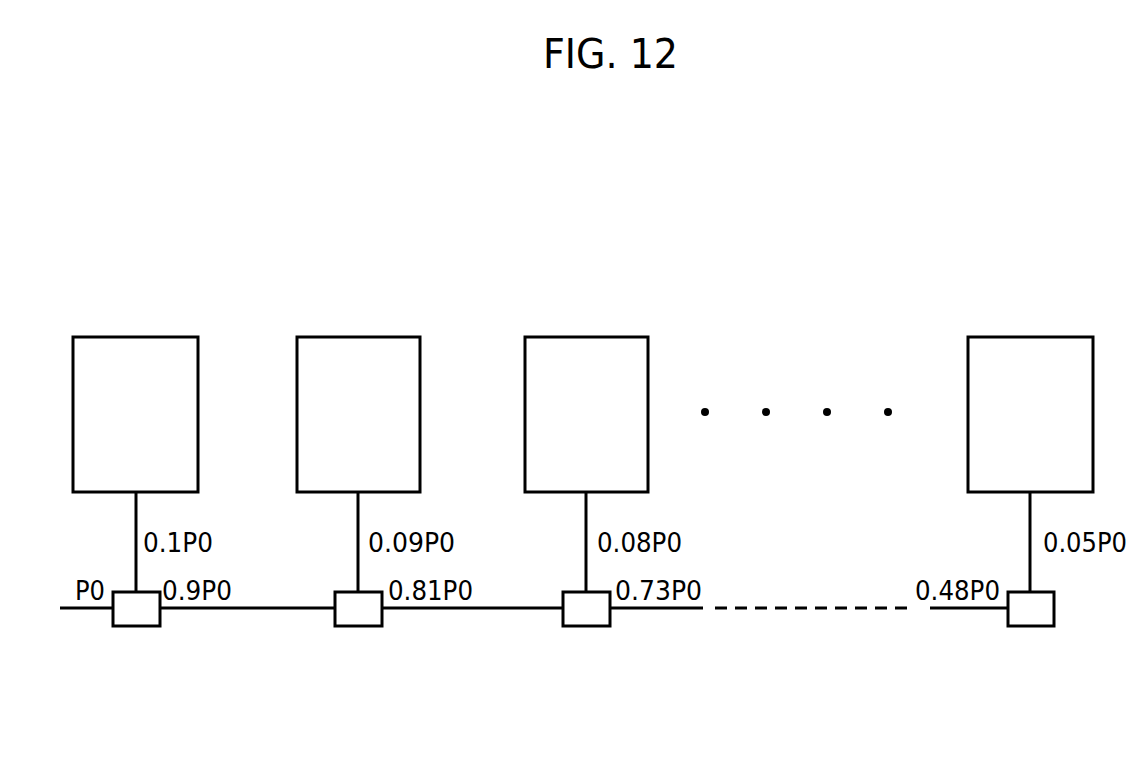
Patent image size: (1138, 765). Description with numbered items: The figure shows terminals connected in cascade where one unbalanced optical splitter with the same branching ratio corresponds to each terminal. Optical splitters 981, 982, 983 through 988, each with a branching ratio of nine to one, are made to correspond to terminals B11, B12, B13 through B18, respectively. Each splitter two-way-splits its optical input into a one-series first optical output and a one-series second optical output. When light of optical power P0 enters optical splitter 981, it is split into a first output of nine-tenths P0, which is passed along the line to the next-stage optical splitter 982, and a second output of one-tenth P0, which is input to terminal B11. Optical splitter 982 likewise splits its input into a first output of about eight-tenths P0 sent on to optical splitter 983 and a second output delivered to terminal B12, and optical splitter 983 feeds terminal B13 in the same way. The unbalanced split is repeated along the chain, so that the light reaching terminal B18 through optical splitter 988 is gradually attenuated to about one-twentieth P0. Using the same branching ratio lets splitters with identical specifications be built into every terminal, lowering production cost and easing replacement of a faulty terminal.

The terminal B11 is at (164, 337).
The terminal B12 is at (388, 337).
The terminal B13 is at (622, 337).
The terminal B18 is at (1054, 337).
The optical splitter 981 is at (135, 626).
The optical splitter 982 is at (357, 626).
The optical splitter 983 is at (586, 626).
The optical splitter 988 is at (1028, 626).